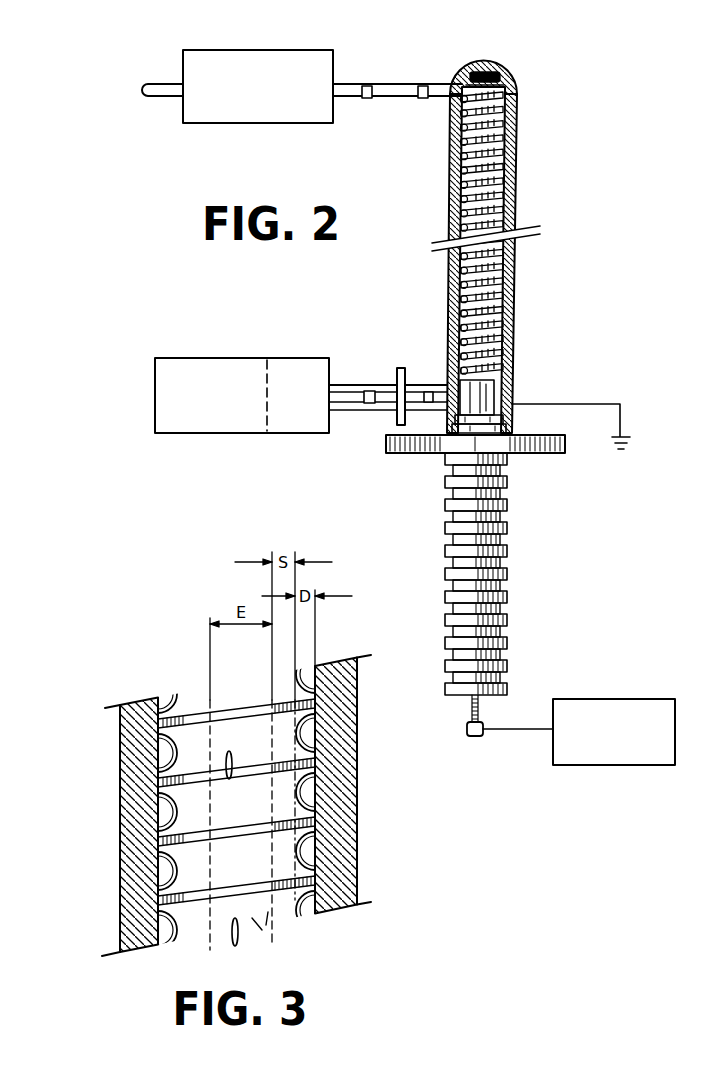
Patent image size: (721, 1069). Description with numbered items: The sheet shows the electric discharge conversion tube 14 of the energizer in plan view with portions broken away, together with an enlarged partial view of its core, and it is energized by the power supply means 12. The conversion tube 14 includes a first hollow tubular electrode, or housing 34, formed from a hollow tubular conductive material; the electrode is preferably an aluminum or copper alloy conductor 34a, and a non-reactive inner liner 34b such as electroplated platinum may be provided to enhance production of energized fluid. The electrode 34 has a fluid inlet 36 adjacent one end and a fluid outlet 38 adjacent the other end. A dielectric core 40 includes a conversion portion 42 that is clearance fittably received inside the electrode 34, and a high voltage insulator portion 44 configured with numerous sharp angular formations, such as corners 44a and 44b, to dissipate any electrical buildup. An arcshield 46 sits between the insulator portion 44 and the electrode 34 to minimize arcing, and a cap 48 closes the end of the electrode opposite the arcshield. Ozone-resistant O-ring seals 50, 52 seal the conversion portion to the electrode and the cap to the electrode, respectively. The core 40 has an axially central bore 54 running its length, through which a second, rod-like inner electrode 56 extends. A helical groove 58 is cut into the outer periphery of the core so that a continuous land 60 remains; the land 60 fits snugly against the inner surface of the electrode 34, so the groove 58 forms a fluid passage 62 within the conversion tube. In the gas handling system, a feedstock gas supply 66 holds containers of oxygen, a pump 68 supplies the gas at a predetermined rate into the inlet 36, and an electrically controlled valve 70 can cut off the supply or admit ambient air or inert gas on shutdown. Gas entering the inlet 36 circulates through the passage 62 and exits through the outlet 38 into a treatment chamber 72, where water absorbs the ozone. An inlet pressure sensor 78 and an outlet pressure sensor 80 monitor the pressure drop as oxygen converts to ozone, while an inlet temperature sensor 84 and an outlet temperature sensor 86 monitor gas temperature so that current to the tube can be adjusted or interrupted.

In FIG. 2, the power supply means 12 is at (603, 766).
In FIG. 2, the electric discharge conversion tube 14 is at (508, 381).
In FIG. 2, the first hollow tubular electrode 34 is at (517, 288).
In FIG. 3, the first hollow tubular electrode 34 is at (232, 805).
In FIG. 3, the aluminum or copper alloy conductor 34a is at (128, 913).
In FIG. 3, the non-reactive inner liner 34b is at (355, 868).
In FIG. 2, the fluid inlet 36 is at (442, 408).
In FIG. 2, the fluid outlet 38 is at (443, 82).
In FIG. 2, the dielectric core 40 is at (500, 384).
In FIG. 2, the conversion portion 42 is at (515, 232).
In FIG. 2, the high voltage insulator portion 44 is at (507, 574).
In FIG. 2, the corner 44a is at (508, 552).
In FIG. 2, the corner 44b is at (503, 582).
In FIG. 2, the arcshield 46 is at (566, 442).
In FIG. 2, the cap 48 is at (500, 62).
In FIG. 2, the seal 50 is at (512, 429).
In FIG. 2, the seal 52 is at (512, 84).
In FIG. 2, the axially central bore 54 is at (512, 400).
In FIG. 3, the axially central bore 54 is at (266, 926).
In FIG. 2, the inner electrode 56 is at (465, 708).
In FIG. 3, the inner electrode 56 is at (245, 856).
In FIG. 2, the helical groove 58 is at (514, 308).
In FIG. 3, the helical groove 58 is at (236, 802).
In FIG. 3, the continuous land 60 is at (236, 802).
In FIG. 3, the fluid passage 62 is at (173, 802).
In FIG. 2, the feedstock gas supply 66 is at (210, 356).
In FIG. 2, the pump 68 is at (305, 356).
In FIG. 2, the electrically controlled valve 70 is at (400, 368).
In FIG. 2, the treatment chamber 72 is at (247, 50).
In FIG. 2, the inlet pressure sensor 78 is at (368, 390).
In FIG. 2, the outlet pressure sensor 80 is at (369, 84).
In FIG. 2, the inlet temperature sensor 84 is at (428, 391).
In FIG. 2, the outlet temperature sensor 86 is at (420, 84).